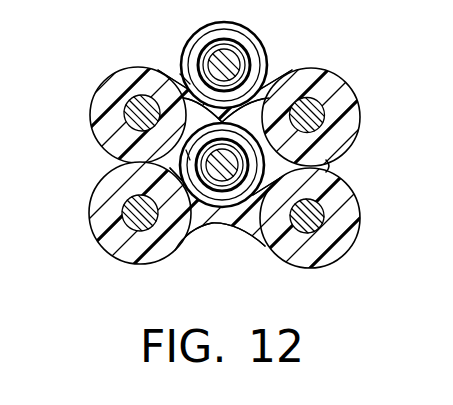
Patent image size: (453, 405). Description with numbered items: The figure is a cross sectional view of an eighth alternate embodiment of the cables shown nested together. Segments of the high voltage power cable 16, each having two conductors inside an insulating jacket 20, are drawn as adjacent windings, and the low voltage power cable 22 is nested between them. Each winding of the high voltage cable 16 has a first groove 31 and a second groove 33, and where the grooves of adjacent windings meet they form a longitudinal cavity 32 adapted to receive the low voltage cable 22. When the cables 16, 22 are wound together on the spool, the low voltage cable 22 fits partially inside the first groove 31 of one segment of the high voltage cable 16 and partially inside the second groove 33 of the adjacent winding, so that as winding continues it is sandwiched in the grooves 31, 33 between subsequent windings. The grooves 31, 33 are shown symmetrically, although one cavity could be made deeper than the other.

The high voltage power cable 16 is at (330, 70).
The insulating jacket 20 is at (356, 201).
The low voltage power cable 22 is at (255, 50).
The first groove 31 is at (176, 75).
The longitudinal cavity 32 is at (326, 172).
The second groove 33 is at (351, 140).